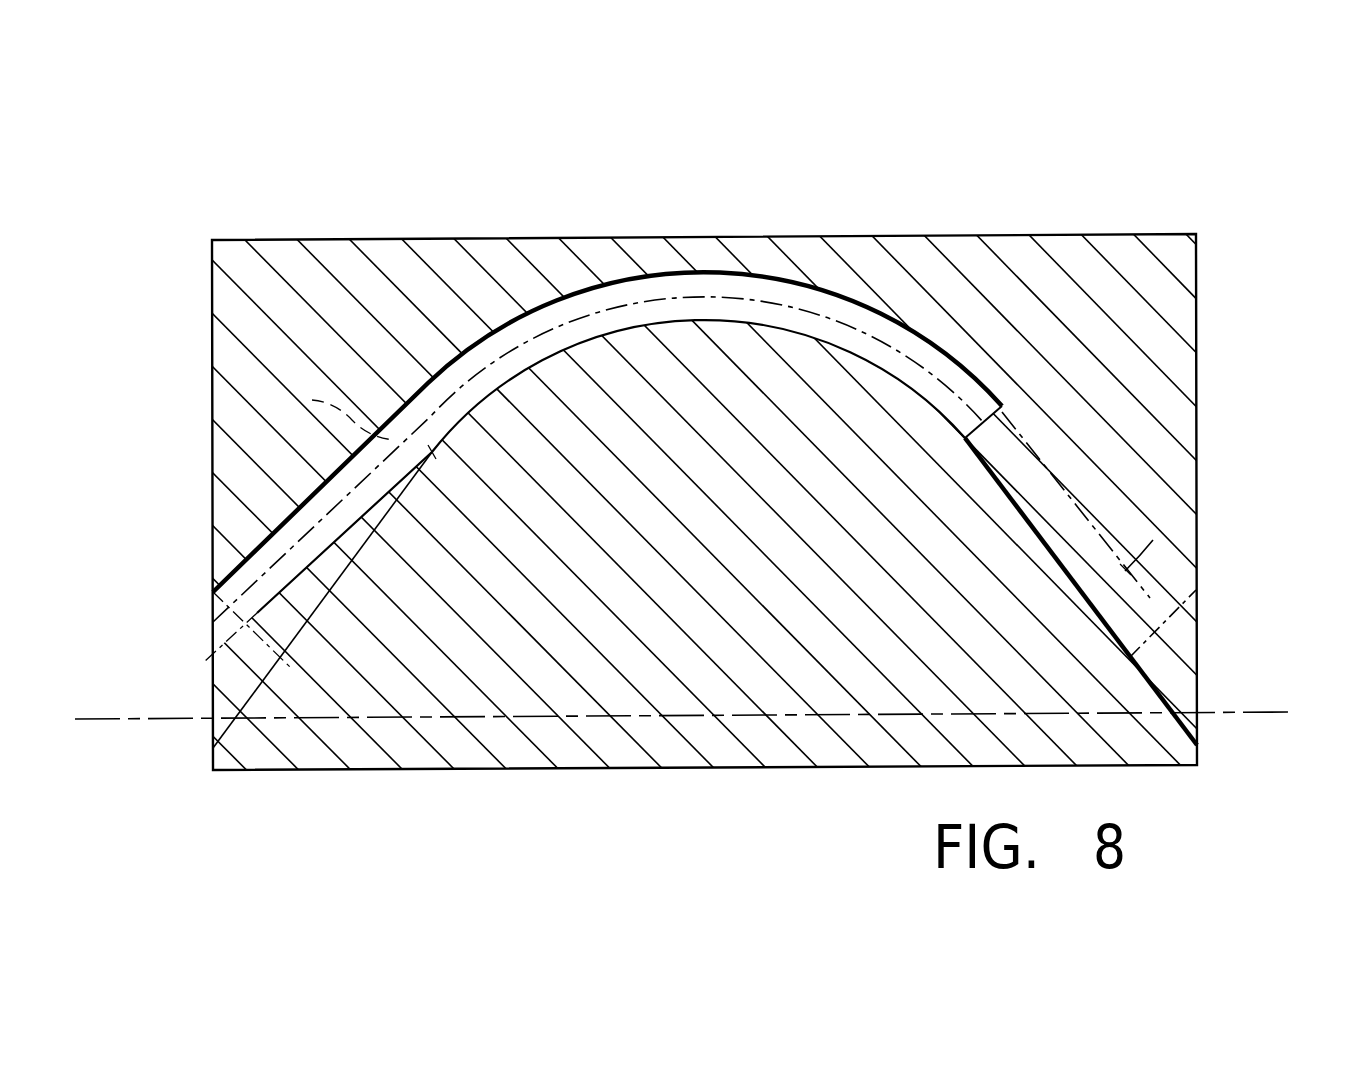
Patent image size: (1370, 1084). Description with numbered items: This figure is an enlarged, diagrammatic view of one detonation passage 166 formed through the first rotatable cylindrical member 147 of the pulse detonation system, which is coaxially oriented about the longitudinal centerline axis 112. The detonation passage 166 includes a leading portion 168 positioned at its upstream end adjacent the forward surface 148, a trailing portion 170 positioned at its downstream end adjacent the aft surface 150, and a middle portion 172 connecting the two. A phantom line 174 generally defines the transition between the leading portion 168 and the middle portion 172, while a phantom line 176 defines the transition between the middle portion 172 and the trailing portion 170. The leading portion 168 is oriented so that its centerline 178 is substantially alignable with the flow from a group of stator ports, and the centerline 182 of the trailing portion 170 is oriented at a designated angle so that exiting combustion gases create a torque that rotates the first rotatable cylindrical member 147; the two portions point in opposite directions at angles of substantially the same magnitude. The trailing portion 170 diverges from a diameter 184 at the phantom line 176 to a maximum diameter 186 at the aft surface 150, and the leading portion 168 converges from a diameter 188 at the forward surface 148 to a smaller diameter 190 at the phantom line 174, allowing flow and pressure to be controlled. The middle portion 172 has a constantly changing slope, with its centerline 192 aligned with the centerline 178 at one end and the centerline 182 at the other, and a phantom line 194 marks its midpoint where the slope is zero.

The longitudinal centerline axis 112 is at (1243, 714).
The first rotatable cylindrical member 147 is at (906, 245).
The forward surface 148 is at (213, 440).
The aft surface 150 is at (1197, 363).
The detonation passage 166 is at (678, 262).
The leading portion 168 is at (266, 541).
The trailing portion 170 is at (1122, 512).
The middle portion 172 is at (567, 294).
The phantom line 174 is at (433, 456).
The phantom line 176 is at (975, 445).
The centerline 178 is at (268, 598).
The centerline 182 is at (1153, 540).
The diameter 184 is at (1002, 408).
The maximum diameter 186 is at (1200, 618).
The diameter 188 is at (210, 625).
The diameter 190 is at (323, 412).
The centerline 192 is at (632, 306).
The phantom line 194 is at (704, 306).